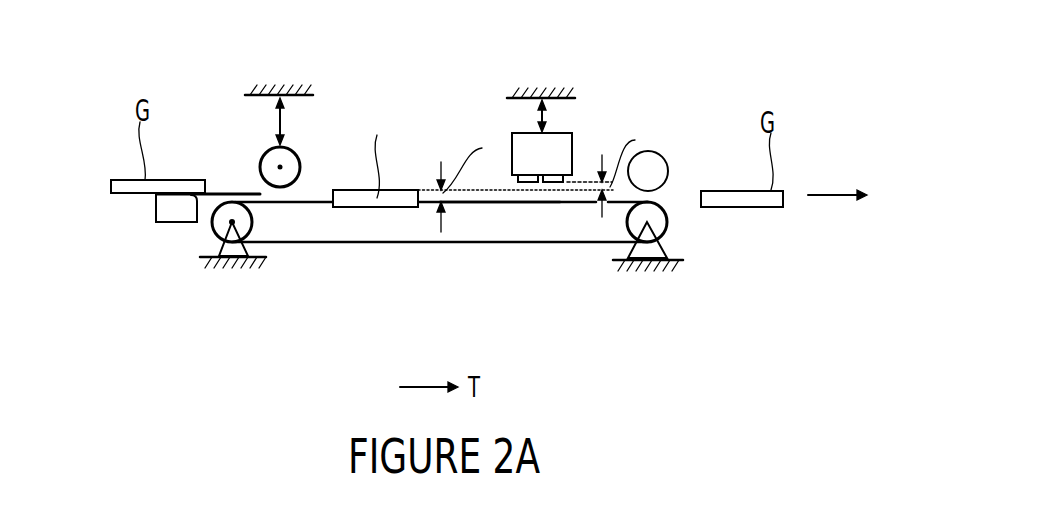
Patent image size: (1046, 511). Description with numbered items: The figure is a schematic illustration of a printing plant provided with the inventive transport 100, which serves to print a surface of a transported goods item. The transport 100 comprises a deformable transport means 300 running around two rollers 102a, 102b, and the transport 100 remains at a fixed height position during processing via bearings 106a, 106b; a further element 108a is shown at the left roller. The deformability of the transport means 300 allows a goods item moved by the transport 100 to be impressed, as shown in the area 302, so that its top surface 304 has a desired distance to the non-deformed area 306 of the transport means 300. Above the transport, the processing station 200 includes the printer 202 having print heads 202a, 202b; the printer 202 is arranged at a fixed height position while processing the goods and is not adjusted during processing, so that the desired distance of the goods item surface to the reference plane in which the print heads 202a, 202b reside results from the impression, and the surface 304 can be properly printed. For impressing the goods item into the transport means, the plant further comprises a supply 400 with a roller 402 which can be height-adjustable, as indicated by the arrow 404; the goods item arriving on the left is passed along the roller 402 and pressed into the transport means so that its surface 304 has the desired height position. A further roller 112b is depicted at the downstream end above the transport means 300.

The transport 100 is at (128, 258).
The roller 102a is at (252, 223).
The roller 102b is at (668, 220).
The bearing 106a is at (215, 248).
The bearing 106b is at (660, 248).
The drive 108a is at (281, 286).
The pressure roller 112b is at (647, 152).
The processing station 200 is at (610, 88).
The printer 202 is at (522, 143).
The print head 202a is at (525, 183).
The print head 202b is at (552, 183).
The transport means 300 is at (437, 243).
The area of impression 302 is at (377, 198).
The top surface 304 is at (392, 190).
The non-deformed area 306 is at (495, 203).
The supply 400 is at (358, 68).
The roller 402 is at (277, 165).
The arrow 404 is at (280, 120).